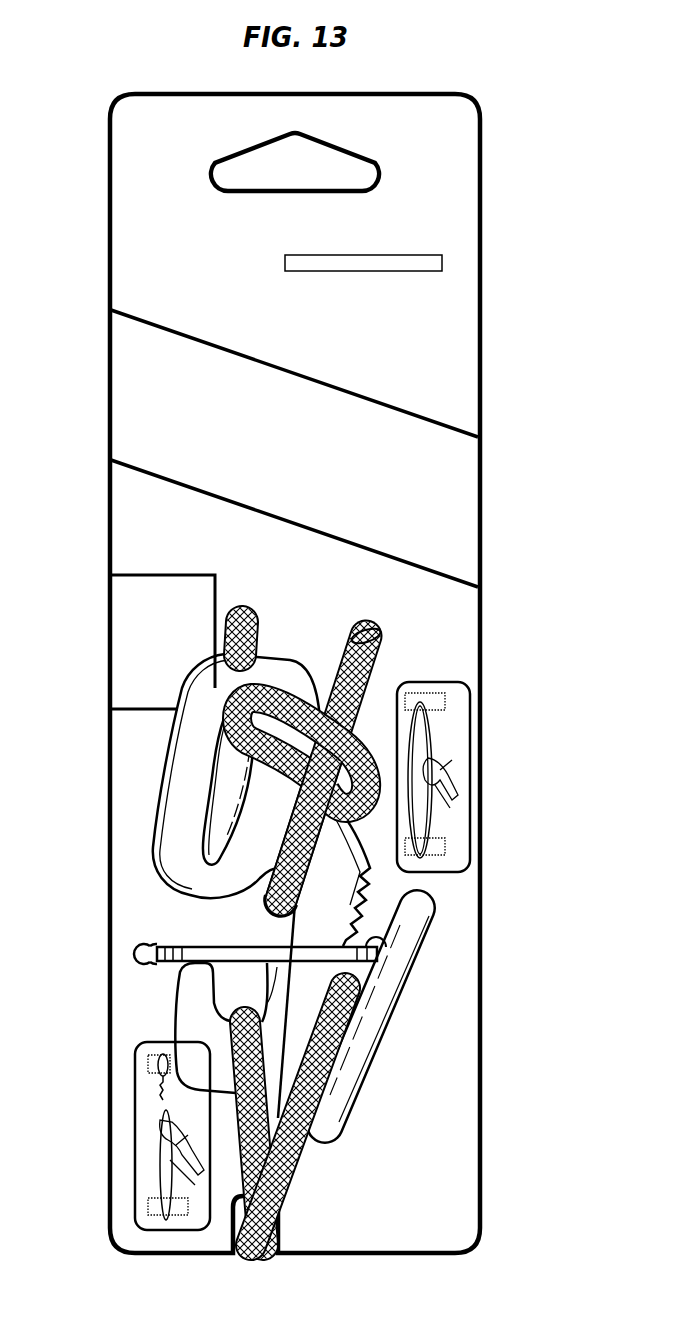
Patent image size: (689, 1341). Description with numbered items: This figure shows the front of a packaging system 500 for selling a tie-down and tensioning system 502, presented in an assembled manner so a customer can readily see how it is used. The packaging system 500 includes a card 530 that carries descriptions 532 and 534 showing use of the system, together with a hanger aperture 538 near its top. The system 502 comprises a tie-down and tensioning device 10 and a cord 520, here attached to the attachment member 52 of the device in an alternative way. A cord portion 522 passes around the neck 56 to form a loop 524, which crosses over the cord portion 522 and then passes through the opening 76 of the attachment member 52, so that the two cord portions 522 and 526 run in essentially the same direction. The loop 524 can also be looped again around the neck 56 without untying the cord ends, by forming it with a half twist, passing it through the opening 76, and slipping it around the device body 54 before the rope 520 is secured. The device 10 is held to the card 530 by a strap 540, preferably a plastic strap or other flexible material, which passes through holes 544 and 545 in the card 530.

The packaging system 500 is at (535, 66).
The card 530 is at (448, 169).
The hanger aperture 538 is at (252, 179).
The description 532 is at (455, 872).
The description 534 is at (133, 1107).
The tie-down and tensioning device 10 is at (150, 850).
The attachment member 52 is at (187, 743).
The opening 76 is at (218, 790).
The neck 56 is at (352, 869).
The device body 54 is at (287, 1023).
The tie-down and tensioning system 502 is at (138, 821).
The cord 520 is at (303, 1147).
The cord portion 522 is at (388, 658).
The loop 524 is at (365, 766).
The cord portion 526 is at (262, 635).
The strap 540 is at (228, 953).
The hole 544 is at (151, 938).
The hole 545 is at (387, 937).